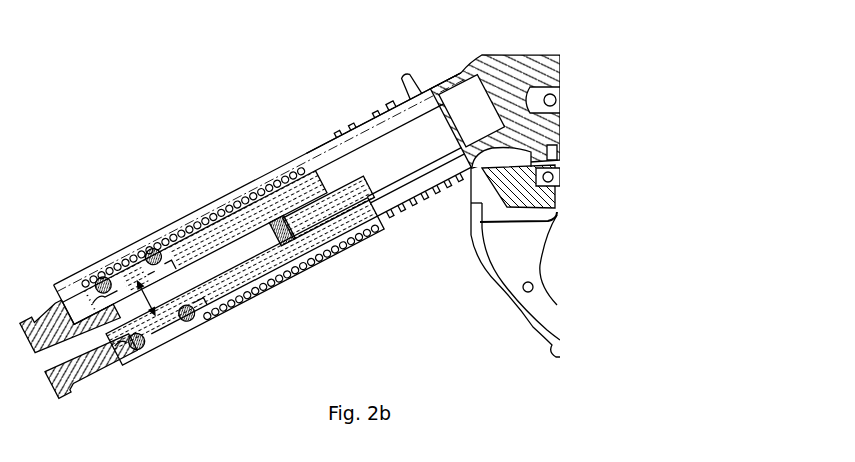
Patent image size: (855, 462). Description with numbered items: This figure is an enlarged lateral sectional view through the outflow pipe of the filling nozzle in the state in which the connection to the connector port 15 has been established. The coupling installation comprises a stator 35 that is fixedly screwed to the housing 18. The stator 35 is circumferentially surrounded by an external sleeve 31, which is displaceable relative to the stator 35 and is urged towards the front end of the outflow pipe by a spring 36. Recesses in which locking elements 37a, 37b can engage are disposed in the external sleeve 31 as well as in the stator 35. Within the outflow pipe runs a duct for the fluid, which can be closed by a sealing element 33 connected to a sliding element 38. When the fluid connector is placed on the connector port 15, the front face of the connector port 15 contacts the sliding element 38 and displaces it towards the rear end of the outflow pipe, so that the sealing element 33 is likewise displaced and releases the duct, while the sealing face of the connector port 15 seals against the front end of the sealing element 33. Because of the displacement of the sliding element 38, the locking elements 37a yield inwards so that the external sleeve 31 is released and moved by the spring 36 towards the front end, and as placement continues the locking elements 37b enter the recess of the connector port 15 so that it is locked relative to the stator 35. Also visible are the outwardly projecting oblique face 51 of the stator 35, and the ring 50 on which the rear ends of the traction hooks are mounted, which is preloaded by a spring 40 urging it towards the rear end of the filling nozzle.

The connector port 15 is at (63, 316).
The housing 18 is at (463, 70).
The external sleeve 31 is at (152, 250).
The sealing element 33 is at (288, 203).
The stator 35 is at (228, 212).
The spring 36 is at (256, 303).
The locking element 37a is at (189, 325).
The locking element 37b is at (143, 350).
The sliding element 38 is at (217, 318).
The spring 40 is at (373, 118).
The ring 50 is at (437, 195).
The oblique face 51 is at (383, 224).